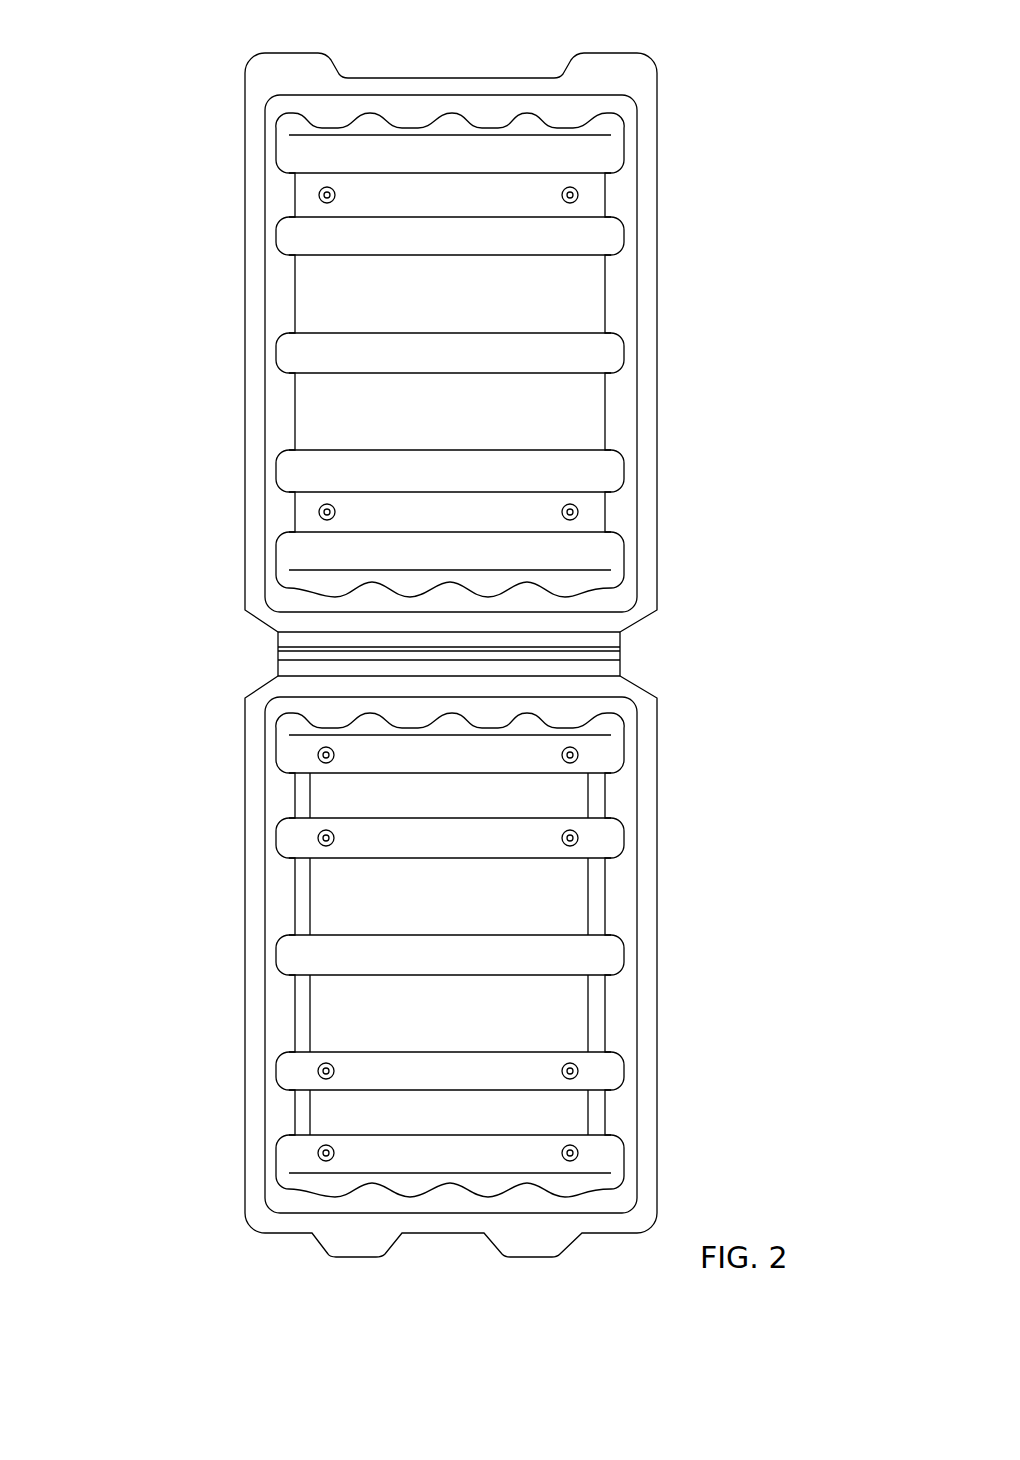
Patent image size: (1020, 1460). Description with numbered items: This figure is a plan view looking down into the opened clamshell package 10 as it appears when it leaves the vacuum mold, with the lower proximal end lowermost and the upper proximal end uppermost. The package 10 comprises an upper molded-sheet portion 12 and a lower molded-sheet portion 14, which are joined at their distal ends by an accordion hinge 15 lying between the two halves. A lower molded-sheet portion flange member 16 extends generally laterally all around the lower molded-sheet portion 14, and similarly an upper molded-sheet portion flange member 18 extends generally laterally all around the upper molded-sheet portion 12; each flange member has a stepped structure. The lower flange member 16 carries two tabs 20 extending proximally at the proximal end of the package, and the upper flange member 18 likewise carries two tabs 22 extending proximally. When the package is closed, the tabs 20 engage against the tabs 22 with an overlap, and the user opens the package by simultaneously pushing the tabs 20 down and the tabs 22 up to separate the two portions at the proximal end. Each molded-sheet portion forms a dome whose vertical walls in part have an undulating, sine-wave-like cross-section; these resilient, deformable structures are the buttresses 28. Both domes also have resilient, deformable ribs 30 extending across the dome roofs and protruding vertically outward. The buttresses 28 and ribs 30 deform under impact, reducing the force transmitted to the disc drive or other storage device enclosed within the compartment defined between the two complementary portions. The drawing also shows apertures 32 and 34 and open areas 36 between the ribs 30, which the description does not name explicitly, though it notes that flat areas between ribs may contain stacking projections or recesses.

The clamshell package 10 is at (700, 57).
The upper molded-sheet portion 12 is at (195, 338).
The lower molded-sheet portion 14 is at (190, 951).
The accordion hinge 15 is at (622, 658).
The lower molded-sheet portion flange member 16 is at (644, 824).
The upper molded-sheet portion flange member 18 is at (648, 450).
The tabs 20 is at (337, 1250).
The tabs 22 is at (274, 87).
The buttresses 28 is at (392, 127).
The ribs 30 is at (429, 169).
The apertures 32 is at (336, 195).
The apertures 34 is at (335, 755).
The slots 36 is at (317, 307).